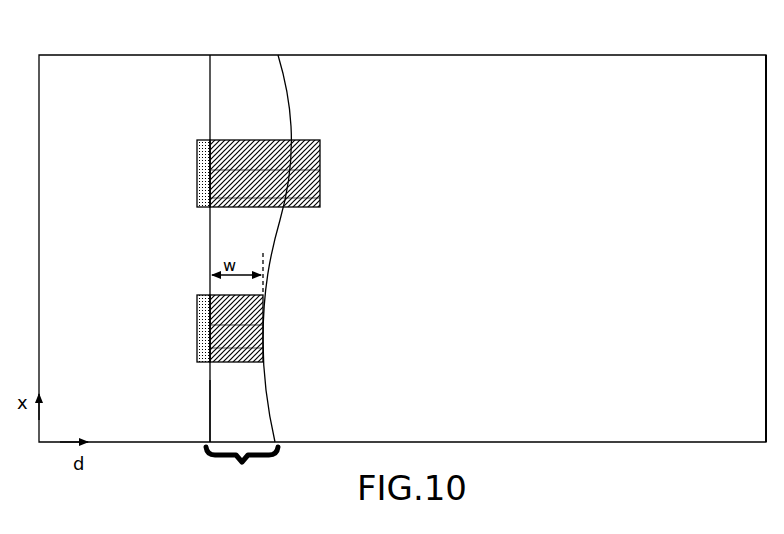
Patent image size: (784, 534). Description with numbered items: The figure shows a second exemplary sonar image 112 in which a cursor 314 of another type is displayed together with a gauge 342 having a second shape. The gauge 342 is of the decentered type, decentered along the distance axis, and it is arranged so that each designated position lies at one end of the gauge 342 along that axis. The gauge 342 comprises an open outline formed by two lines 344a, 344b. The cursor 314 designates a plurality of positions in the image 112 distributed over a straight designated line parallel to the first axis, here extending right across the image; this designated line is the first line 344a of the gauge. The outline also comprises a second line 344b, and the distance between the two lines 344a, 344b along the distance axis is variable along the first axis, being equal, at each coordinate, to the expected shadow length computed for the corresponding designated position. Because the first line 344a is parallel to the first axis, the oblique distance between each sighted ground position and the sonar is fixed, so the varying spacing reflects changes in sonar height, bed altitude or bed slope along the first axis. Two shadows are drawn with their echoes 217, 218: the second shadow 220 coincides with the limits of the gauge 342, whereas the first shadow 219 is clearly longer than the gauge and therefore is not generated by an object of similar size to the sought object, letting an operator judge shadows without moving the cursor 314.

The image 112 is at (123, 64).
The first echo 217 is at (224, 152).
The second echo 218 is at (236, 318).
The first shadow 219 is at (226, 142).
The second shadow 220 is at (249, 312).
The cursor 314 is at (206, 233).
The gauge 342 is at (242, 470).
The first line of the gauge 344a is at (210, 425).
The second line of the gauge 344b is at (263, 378).